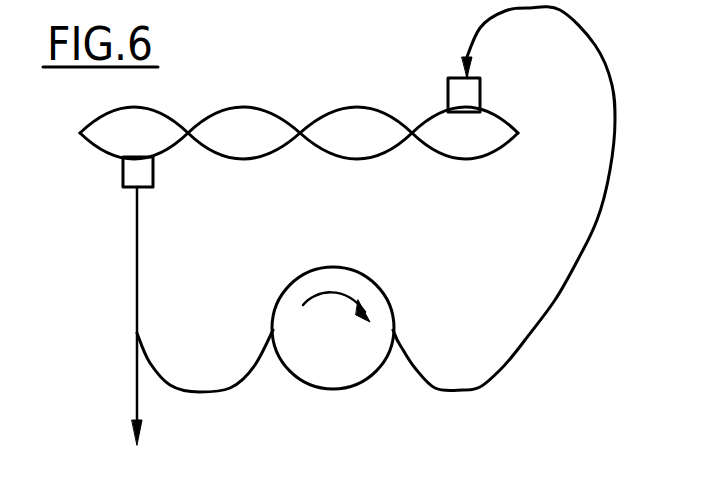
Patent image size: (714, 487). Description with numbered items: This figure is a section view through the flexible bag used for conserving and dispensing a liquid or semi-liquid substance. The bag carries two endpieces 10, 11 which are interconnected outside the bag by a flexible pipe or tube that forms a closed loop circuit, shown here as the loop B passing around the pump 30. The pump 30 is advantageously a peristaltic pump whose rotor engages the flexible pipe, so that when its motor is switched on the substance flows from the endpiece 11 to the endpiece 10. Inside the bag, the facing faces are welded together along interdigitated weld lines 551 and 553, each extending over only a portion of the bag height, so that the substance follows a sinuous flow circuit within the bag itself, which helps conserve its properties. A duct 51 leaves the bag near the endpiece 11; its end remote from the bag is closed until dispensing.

The endpiece 10 is at (472, 92).
The endpiece 11 is at (128, 172).
The pump 30 is at (380, 303).
The duct 51 is at (133, 392).
The weld line 551 is at (412, 125).
The weld line 553 is at (188, 137).
The band B is at (583, 250).